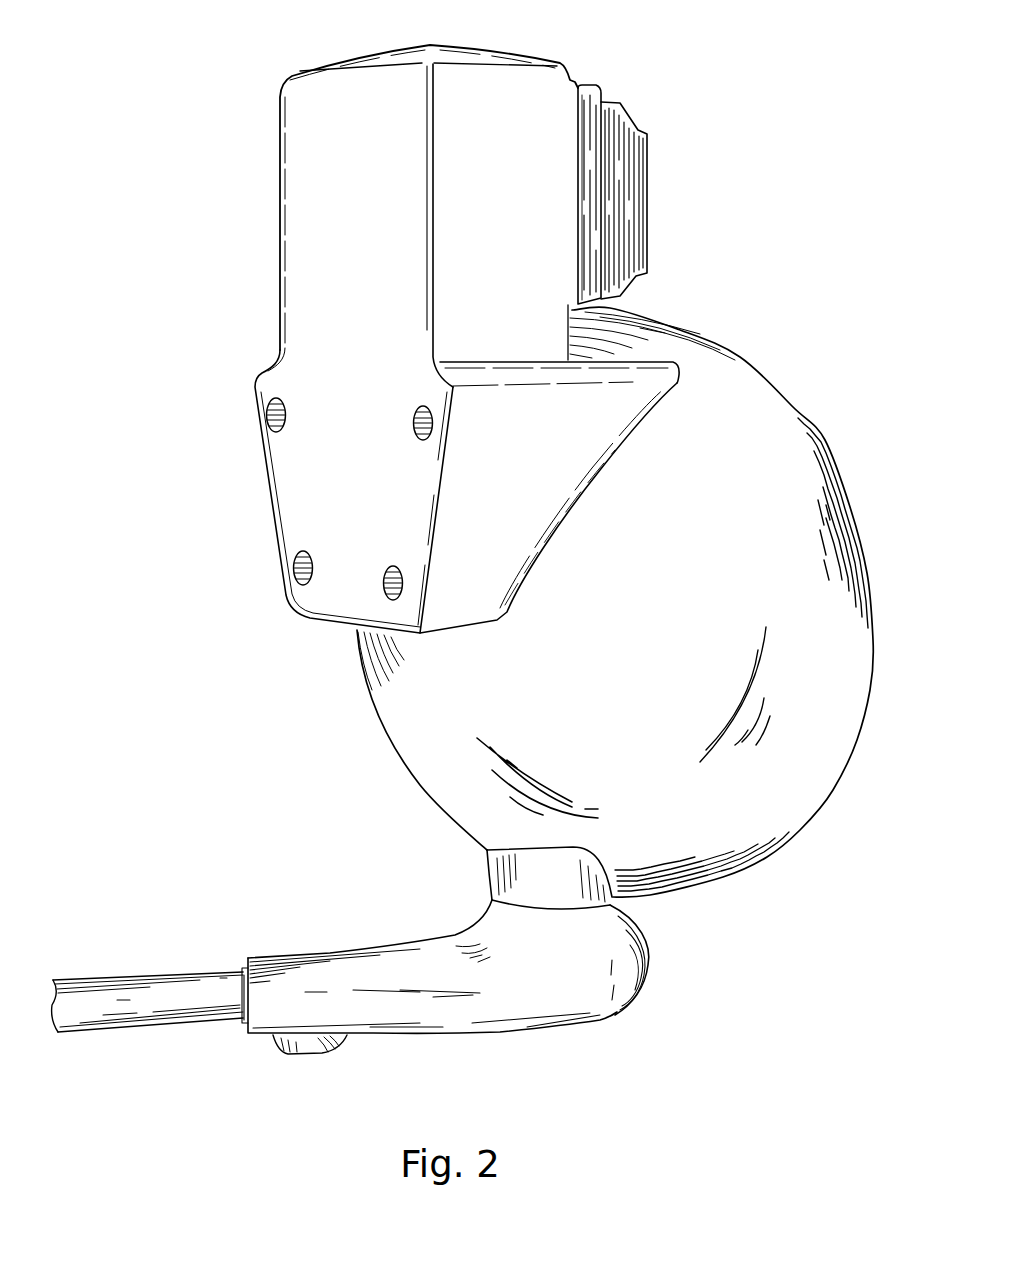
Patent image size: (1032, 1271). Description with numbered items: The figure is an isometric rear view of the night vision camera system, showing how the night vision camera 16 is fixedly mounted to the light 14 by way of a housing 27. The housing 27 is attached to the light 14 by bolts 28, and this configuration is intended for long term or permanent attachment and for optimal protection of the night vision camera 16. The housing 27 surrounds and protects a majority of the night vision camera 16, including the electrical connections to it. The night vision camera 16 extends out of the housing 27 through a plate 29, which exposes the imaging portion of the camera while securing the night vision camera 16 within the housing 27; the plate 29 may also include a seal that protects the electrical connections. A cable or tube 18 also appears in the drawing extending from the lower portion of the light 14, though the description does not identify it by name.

The spherical head / housing body 14 is at (783, 415).
The connector fitting 16 is at (638, 128).
The cable / tube 18 is at (147, 973).
The housing 27 is at (315, 160).
The mounting holes 28 is at (267, 417).
The neck 29 is at (597, 83).